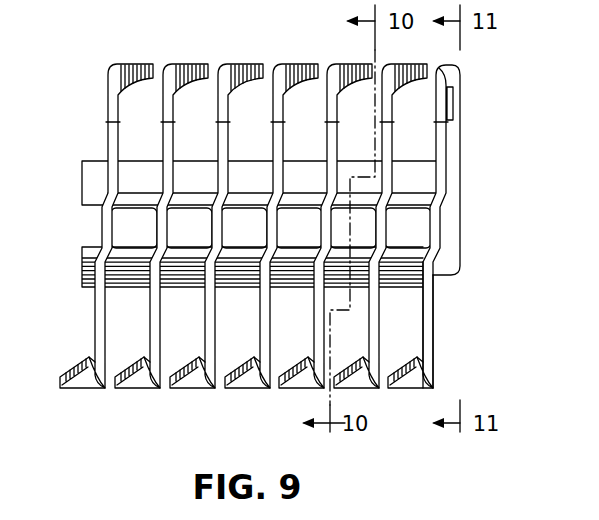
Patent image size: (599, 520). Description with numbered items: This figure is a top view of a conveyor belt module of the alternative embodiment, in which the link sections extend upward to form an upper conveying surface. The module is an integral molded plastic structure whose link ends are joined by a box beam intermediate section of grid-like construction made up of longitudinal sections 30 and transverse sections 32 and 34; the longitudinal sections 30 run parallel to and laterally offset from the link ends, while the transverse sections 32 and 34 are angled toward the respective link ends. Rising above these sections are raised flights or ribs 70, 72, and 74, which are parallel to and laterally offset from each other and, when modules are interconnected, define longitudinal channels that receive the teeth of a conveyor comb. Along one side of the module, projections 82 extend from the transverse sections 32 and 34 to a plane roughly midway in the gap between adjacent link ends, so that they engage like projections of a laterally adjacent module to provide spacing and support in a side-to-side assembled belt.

The longitudinal sections 30 is at (161, 226).
The transverse sections 32 is at (148, 196).
The transverse sections 34 is at (136, 252).
The raised rib 70 is at (450, 226).
The raised rib 72 is at (436, 225).
The raised rib 74 is at (427, 305).
The projections 82 is at (82, 183).